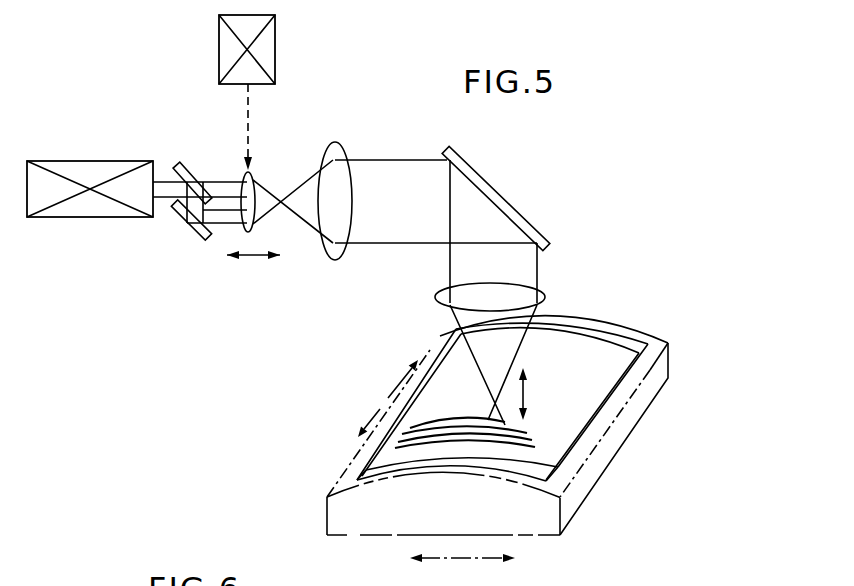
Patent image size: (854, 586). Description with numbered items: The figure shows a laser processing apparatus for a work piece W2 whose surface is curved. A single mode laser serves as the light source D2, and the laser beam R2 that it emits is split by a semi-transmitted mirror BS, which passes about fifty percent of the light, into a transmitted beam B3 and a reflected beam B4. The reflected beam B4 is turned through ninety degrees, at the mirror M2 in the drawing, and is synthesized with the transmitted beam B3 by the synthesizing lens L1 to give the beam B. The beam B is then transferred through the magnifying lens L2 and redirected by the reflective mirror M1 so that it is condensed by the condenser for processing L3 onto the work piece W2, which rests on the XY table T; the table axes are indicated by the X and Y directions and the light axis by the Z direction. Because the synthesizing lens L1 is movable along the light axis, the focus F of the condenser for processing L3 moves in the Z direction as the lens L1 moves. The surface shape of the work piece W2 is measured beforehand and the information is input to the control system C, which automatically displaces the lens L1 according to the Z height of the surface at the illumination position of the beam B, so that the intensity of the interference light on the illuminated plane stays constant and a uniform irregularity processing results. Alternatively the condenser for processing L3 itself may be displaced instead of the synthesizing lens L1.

The control system C is at (219, 45).
The laser light source D2 is at (73, 168).
The laser beam R2 is at (163, 186).
The beam splitter BS is at (190, 163).
The transmitted beam B3 is at (220, 187).
The reflected beam B4 is at (227, 221).
The mirror M2 is at (173, 219).
The synthesizing lens L1 is at (253, 182).
The magnifying lens L2 is at (340, 150).
The reflective mirror M1 is at (510, 202).
The beam B is at (545, 268).
The condenser for processing L3 is at (545, 297).
The focus F is at (497, 400).
The Z direction Z is at (530, 393).
The Y direction Y is at (373, 420).
The X direction X is at (473, 558).
The work piece W2 is at (607, 400).
The XY table T is at (585, 478).